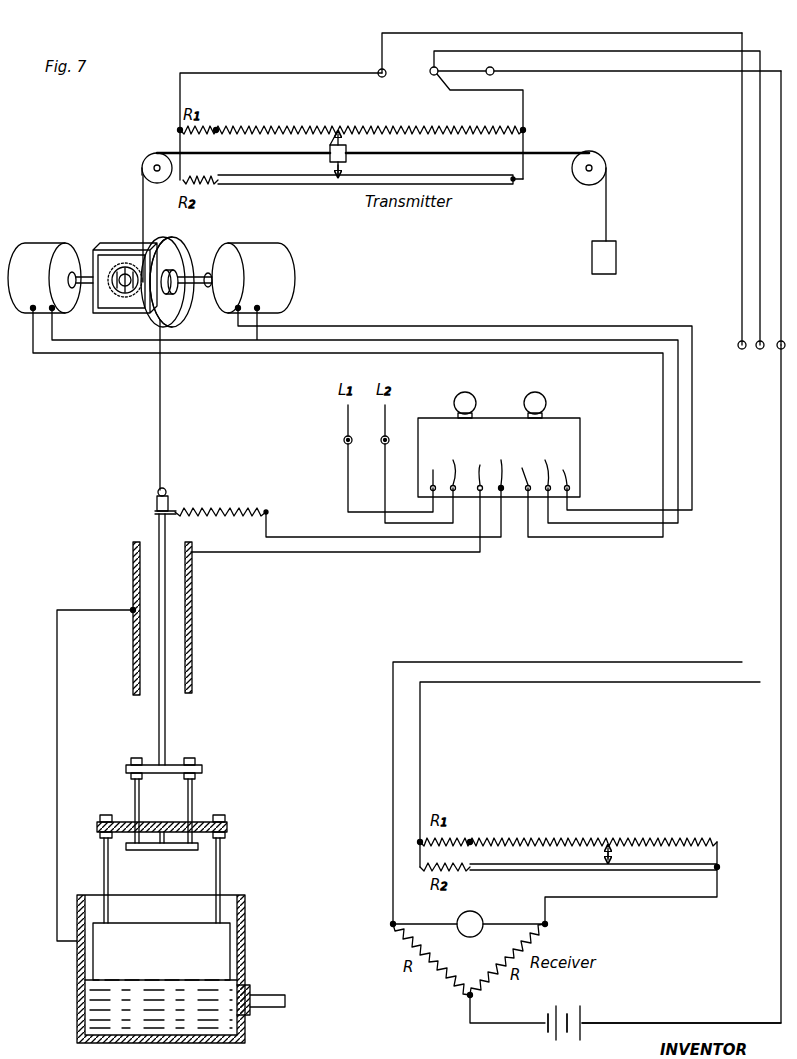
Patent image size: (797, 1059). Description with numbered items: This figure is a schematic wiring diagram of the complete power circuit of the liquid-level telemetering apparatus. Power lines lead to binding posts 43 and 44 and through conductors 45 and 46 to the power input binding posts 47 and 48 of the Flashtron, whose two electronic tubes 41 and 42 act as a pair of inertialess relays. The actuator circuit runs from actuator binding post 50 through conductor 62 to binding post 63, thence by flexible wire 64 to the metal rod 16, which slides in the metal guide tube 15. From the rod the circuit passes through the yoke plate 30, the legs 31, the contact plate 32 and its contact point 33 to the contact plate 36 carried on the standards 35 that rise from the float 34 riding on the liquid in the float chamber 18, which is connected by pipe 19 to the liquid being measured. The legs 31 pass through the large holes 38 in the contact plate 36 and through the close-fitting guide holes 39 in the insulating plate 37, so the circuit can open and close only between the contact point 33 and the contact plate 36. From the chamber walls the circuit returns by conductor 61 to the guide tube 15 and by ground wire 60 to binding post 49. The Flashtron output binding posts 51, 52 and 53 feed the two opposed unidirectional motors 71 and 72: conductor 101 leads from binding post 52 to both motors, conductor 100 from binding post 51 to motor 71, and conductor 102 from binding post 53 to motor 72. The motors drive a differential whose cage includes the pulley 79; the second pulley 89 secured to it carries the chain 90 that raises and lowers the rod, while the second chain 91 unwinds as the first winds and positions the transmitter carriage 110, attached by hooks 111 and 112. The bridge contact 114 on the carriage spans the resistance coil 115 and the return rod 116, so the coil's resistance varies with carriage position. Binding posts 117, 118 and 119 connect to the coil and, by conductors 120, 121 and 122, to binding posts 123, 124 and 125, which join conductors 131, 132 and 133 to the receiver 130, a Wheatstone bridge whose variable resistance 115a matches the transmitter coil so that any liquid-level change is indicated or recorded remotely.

The guide tube 15 is at (133, 566).
The metal rod 16 is at (166, 718).
The float pot or chamber 18 is at (241, 948).
The pipe 19 is at (275, 1008).
The yoke plate 30 is at (148, 765).
The legs 31 is at (134, 786).
The contact plate 32 is at (184, 851).
The contact point 33 is at (159, 843).
The float 34 is at (105, 966).
The standards 35 is at (221, 866).
The contact plate 36 is at (228, 830).
The insulating plate 37 is at (118, 822).
The holes 38 is at (104, 838).
The guide holes 39 is at (193, 820).
The electronic tube 41 is at (466, 387).
The electronic tube 42 is at (536, 387).
The binding post 43 is at (344, 439).
The binding post 44 is at (381, 439).
The conductor 45 is at (348, 466).
The conductor 46 is at (385, 475).
The power input binding post 47 is at (431, 473).
The power input binding post 48 is at (452, 462).
The binding post 49 is at (475, 473).
The binding post 50 is at (499, 462).
The binding post 51 is at (523, 473).
The binding post 52 is at (545, 462).
The binding post 53 is at (562, 473).
The ground wire 60 is at (355, 552).
The conductor 61 is at (57, 746).
The conductor 62 is at (338, 537).
The binding post 63 is at (267, 511).
The flexible wire 64 is at (230, 508).
The unidirectional motor 71 is at (37, 248).
The unidirectional motor 72 is at (254, 248).
The pulley 79 is at (173, 238).
The second pulley 89 is at (178, 272).
The chain 90 is at (160, 405).
The second chain 91 is at (143, 196).
The conductor 100 is at (640, 357).
The conductor 101 is at (663, 400).
The conductor 102 is at (678, 431).
The carriage 110 is at (343, 145).
The hook 111 is at (331, 145).
The hook 112 is at (347, 153).
The bridge contact 114 is at (339, 180).
The resistance coil 115 is at (470, 128).
The variable resistance 115a is at (580, 838).
The return rod 116 is at (284, 184).
The binding post 117 is at (379, 76).
The binding post 118 is at (431, 74).
The binding post 119 is at (494, 73).
The conductor 120 is at (604, 33).
The conductor 121 is at (748, 42).
The conductor 122 is at (781, 110).
The binding post 123 is at (739, 342).
The binding post 124 is at (757, 341).
The binding post 125 is at (778, 341).
The receiver 130 is at (440, 912).
The conductor 131 is at (393, 776).
The conductor 132 is at (420, 776).
The conductor 133 is at (781, 776).